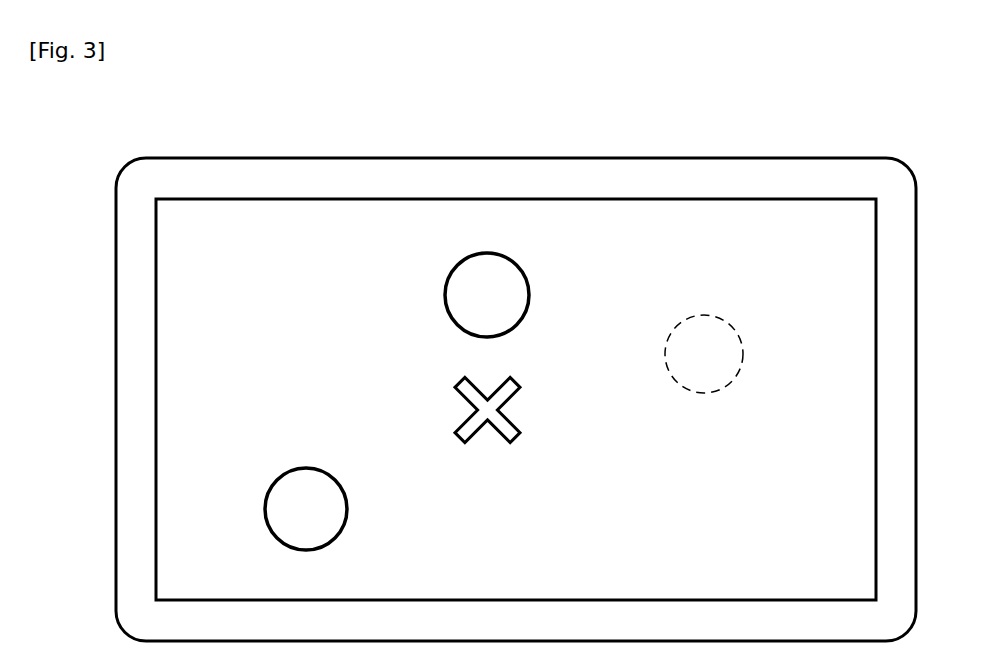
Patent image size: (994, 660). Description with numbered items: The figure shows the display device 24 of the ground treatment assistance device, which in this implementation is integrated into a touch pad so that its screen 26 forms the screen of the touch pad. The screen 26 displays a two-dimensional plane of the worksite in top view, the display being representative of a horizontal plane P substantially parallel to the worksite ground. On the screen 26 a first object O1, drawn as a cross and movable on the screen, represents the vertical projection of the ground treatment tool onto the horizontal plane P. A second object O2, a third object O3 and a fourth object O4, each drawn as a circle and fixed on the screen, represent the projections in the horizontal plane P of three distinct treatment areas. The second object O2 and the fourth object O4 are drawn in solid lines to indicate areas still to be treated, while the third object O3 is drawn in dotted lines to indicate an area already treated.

The display device 24 is at (771, 197).
The screen 26 is at (846, 577).
The horizontal plane P is at (201, 250).
The first object O1 is at (472, 423).
The second object O2 is at (500, 307).
The third object O3 is at (718, 367).
The fourth object O4 is at (320, 521).